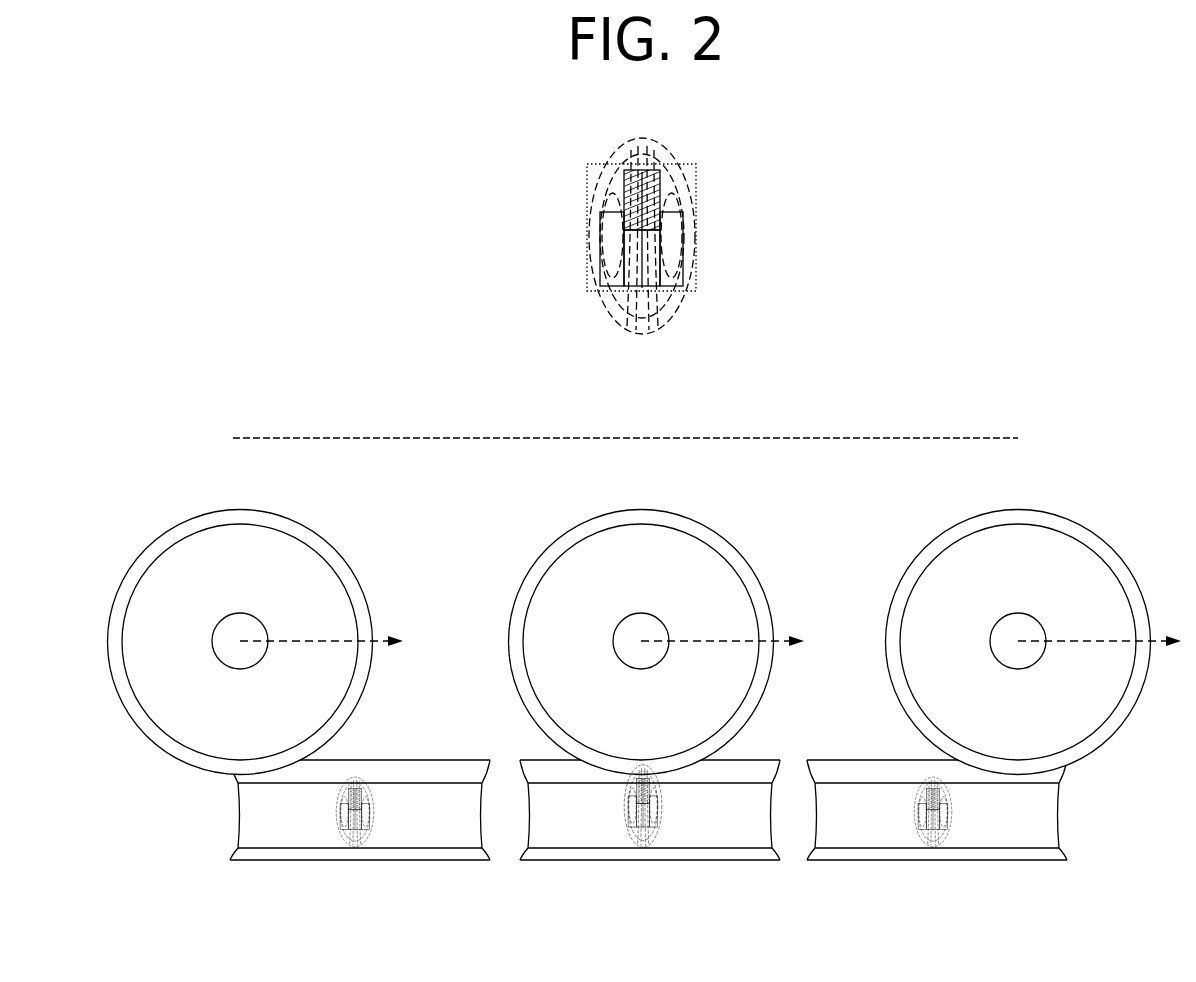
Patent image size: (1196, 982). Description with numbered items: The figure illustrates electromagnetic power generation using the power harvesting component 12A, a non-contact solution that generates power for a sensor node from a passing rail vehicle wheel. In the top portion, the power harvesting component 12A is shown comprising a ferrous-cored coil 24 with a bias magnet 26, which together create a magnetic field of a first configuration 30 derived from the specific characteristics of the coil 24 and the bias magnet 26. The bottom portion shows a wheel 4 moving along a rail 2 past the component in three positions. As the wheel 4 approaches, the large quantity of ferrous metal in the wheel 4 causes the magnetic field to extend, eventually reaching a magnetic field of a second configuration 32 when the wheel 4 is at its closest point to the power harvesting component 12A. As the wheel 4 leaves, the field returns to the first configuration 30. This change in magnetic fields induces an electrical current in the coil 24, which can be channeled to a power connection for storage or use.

The rail 2 is at (292, 829).
The wheel 4 is at (250, 586).
The power harvesting component 12A is at (591, 164).
The ferrous-cored coil 24 is at (642, 172).
The bias magnet 26 is at (642, 288).
The magnetic field of a first configuration 30 is at (606, 318).
The magnetic field of a second configuration 32 is at (669, 818).